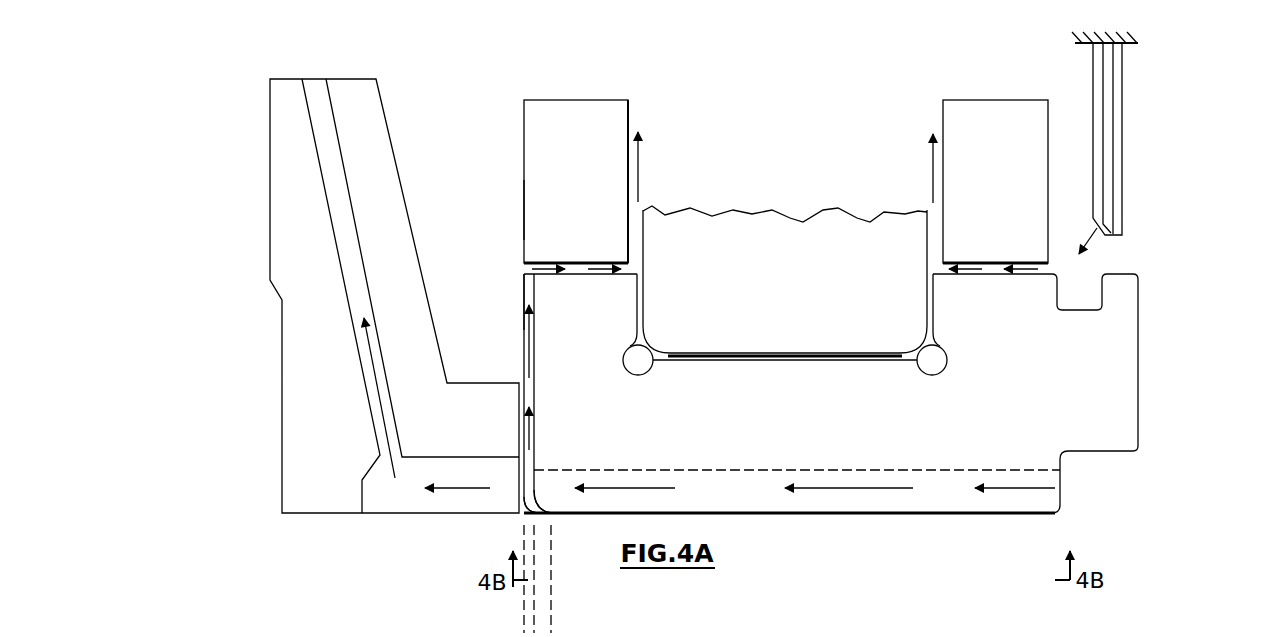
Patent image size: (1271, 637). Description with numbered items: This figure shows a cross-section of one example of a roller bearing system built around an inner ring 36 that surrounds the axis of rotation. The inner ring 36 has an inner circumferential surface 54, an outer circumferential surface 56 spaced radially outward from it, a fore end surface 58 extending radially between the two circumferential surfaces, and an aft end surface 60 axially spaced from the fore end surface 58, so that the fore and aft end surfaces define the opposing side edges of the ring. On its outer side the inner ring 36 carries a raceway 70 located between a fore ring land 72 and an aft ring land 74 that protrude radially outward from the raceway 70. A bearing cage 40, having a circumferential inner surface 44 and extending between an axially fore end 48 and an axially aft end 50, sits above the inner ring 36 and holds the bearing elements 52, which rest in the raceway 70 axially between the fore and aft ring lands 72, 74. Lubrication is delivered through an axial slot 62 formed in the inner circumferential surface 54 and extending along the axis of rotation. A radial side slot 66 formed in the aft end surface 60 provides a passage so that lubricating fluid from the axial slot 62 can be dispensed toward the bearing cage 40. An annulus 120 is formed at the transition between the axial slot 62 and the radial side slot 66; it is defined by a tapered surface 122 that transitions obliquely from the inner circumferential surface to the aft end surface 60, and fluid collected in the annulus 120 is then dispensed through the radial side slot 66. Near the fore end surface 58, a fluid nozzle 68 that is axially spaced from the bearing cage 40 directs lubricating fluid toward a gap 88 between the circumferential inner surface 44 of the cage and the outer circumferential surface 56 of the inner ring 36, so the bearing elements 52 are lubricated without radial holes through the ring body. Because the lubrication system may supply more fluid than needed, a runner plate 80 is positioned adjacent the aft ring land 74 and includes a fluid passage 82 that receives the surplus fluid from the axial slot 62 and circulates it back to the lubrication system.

The inner ring 36 is at (880, 430).
The bearing cage 40 is at (543, 145).
The circumferential inner surface 44 is at (528, 265).
The axially fore end 48 is at (1048, 128).
The axially aft end 50 is at (523, 218).
The bearing elements 52 is at (750, 237).
The inner circumferential surface 54 is at (973, 515).
The outer circumferential surface 56 is at (1130, 273).
The fore end surface 58 is at (1140, 403).
The aft end surface 60 is at (535, 403).
The axial slot 62 is at (1040, 502).
The radial side slot 66 is at (526, 293).
The fluid nozzle 68 is at (1122, 175).
The raceway 70 is at (783, 362).
The fore ring land 72 is at (992, 275).
The aft ring land 74 is at (577, 278).
The runner plate 80 is at (300, 247).
The fluid passage 82 is at (362, 289).
The gap 88 is at (1051, 266).
The annulus 120 is at (547, 506).
The tapered surface 122 is at (530, 506).